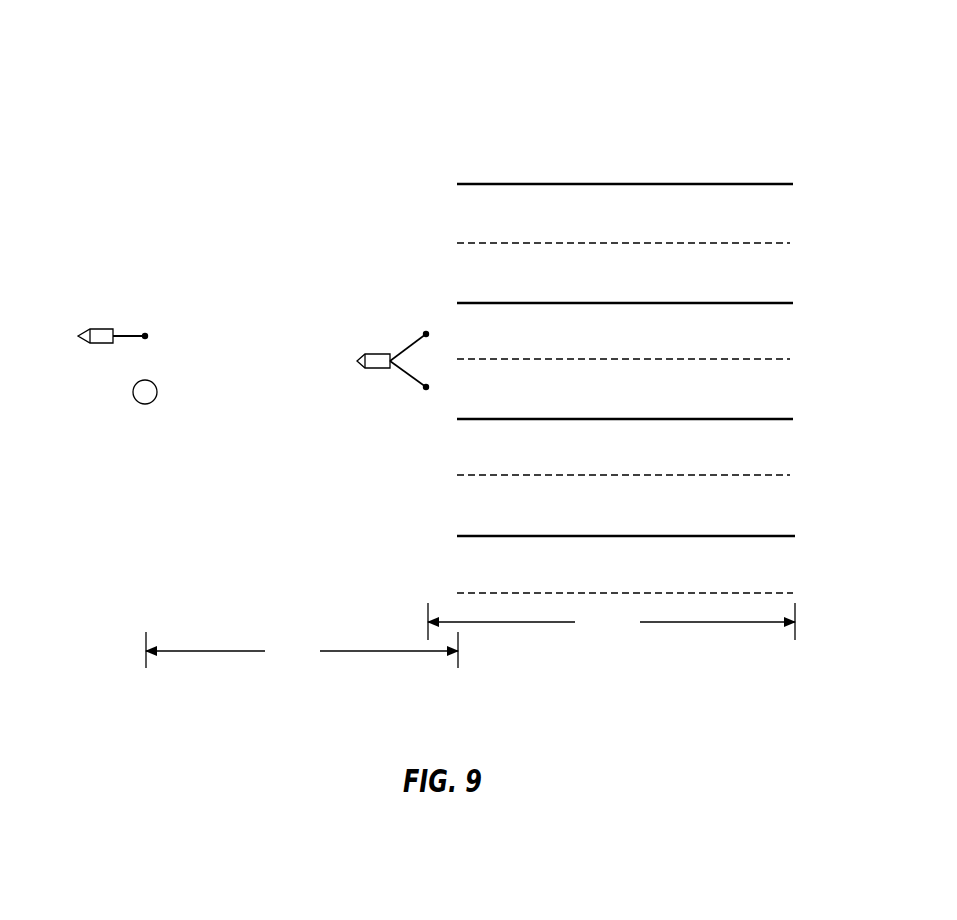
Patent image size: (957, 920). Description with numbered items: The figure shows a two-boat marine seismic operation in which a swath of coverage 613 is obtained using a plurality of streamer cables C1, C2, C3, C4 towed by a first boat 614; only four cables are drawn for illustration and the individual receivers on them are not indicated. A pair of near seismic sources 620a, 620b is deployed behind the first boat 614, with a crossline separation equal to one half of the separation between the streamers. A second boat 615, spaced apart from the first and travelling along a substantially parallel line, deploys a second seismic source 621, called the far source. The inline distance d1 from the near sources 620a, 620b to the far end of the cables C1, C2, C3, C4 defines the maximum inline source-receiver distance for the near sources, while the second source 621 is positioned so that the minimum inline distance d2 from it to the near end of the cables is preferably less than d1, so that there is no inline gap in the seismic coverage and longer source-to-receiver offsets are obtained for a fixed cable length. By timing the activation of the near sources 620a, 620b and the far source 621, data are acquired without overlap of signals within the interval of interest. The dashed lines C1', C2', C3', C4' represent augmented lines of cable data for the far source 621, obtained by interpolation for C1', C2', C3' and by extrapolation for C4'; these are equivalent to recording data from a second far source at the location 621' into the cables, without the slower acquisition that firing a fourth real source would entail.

The swath of coverage 613 is at (215, 63).
The first boat 614 is at (372, 354).
The second boat 615 is at (96, 345).
The near seismic source 620a is at (426, 334).
The near seismic source 620b is at (426, 387).
The second seismic source 621 is at (164, 317).
The second far source 621' is at (196, 415).
The cable C1 is at (632, 167).
The augmented line of cable data C1' is at (640, 220).
The cable C2 is at (632, 286).
The augmented line of cable data C2' is at (640, 336).
The cable C3 is at (632, 402).
The augmented line of cable data C3' is at (640, 452).
The cable C4 is at (632, 519).
The augmented line of cable data C4' is at (652, 558).
The inline distance d1 is at (611, 622).
The minimum inline distance d2 is at (302, 651).